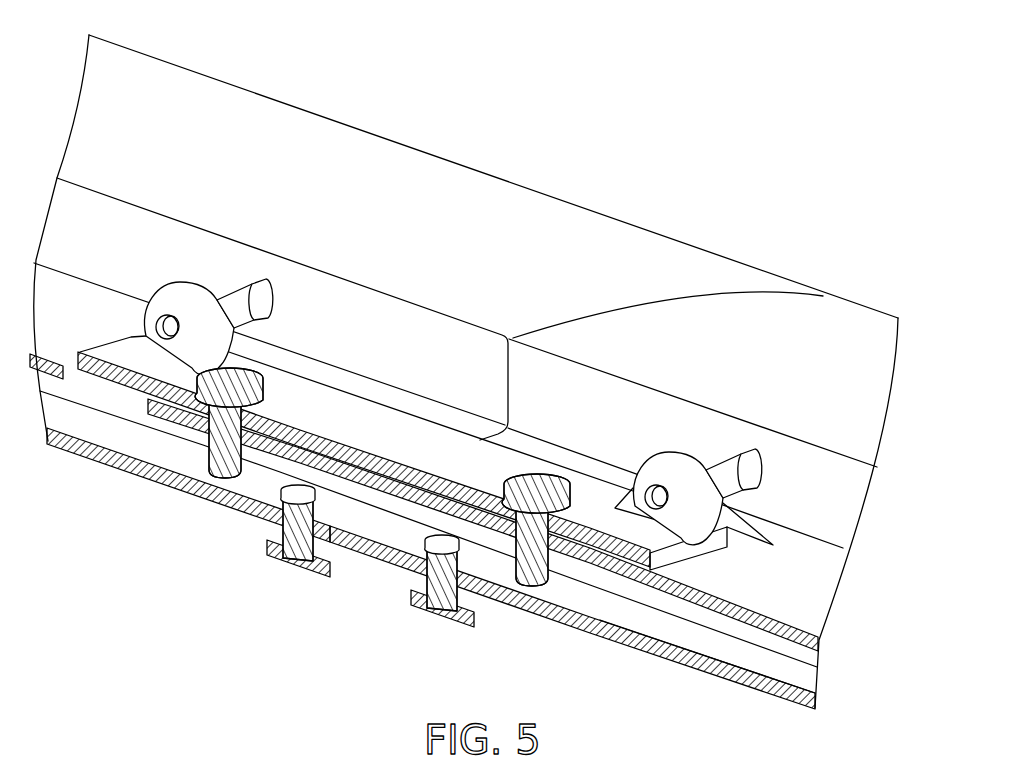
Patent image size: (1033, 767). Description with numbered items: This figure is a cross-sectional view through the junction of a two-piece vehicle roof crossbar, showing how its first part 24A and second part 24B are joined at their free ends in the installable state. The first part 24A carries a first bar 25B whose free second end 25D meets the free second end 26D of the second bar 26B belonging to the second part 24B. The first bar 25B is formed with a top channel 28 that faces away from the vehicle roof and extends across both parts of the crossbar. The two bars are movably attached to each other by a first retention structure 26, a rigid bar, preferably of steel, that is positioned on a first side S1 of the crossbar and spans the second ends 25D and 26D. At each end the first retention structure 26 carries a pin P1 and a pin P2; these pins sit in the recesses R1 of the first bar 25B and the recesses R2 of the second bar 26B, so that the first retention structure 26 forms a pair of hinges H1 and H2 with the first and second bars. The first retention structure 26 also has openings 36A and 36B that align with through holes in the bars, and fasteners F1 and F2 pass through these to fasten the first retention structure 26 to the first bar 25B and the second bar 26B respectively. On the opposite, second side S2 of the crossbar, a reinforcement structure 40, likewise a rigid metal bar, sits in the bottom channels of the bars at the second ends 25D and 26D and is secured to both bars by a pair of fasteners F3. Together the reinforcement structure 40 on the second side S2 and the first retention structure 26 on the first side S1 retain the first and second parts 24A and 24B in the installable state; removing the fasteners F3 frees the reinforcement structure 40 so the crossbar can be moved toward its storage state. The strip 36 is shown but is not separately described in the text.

The first part 24A is at (466, 236).
The second part 24B is at (727, 453).
The first bar 25B is at (216, 75).
The second end 25D is at (515, 178).
The first retention structure 26 is at (373, 428).
The second bar 26B is at (900, 363).
The second end 26D is at (888, 308).
The top channel 28 is at (64, 285).
The support strip 36 is at (80, 445).
The opening 36A is at (232, 480).
The opening 36B is at (545, 590).
The reinforcement structure 40 is at (360, 562).
The fastener F1 is at (259, 436).
The fastener F2 is at (536, 534).
The fasteners F3 is at (300, 566).
The hinge H1 is at (192, 298).
The hinge H2 is at (703, 481).
The pin P1 is at (231, 302).
The pin P2 is at (718, 470).
The recesses R1 is at (266, 292).
The recesses R2 is at (752, 462).
The first side S1 is at (798, 580).
The second side S2 is at (638, 662).